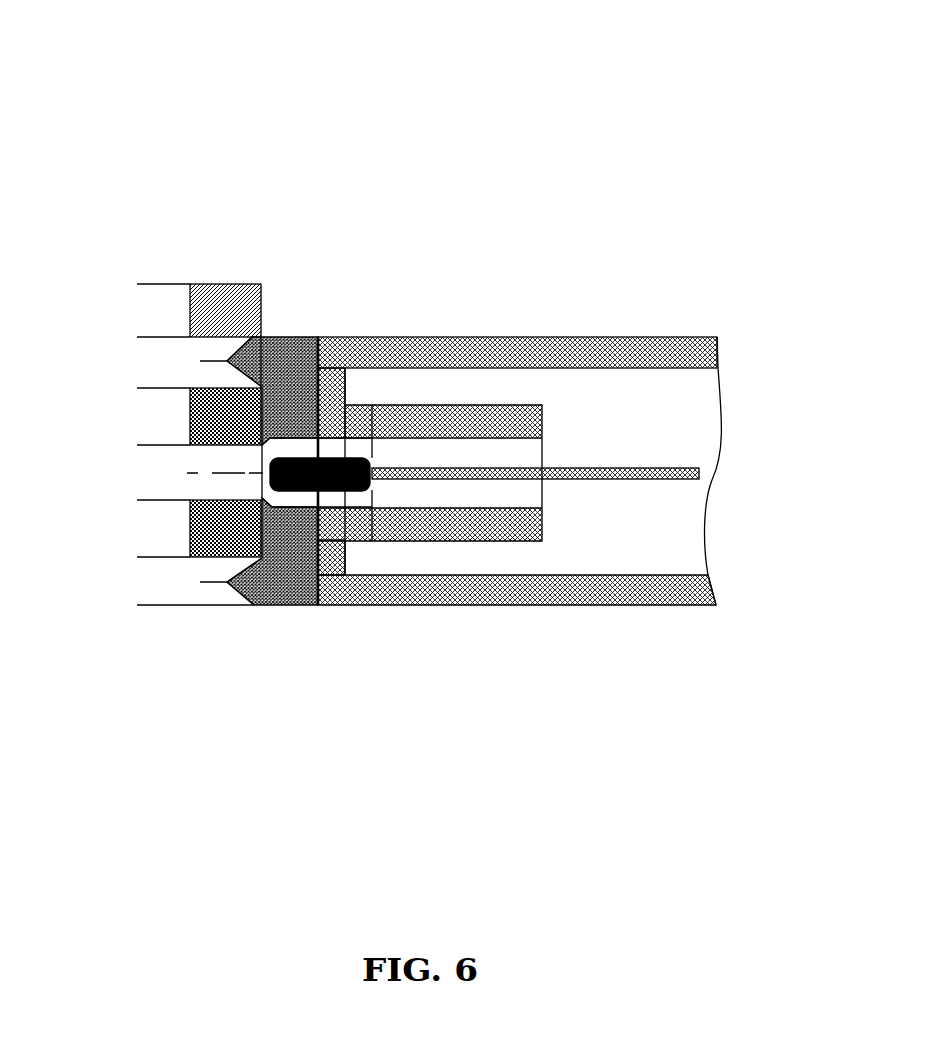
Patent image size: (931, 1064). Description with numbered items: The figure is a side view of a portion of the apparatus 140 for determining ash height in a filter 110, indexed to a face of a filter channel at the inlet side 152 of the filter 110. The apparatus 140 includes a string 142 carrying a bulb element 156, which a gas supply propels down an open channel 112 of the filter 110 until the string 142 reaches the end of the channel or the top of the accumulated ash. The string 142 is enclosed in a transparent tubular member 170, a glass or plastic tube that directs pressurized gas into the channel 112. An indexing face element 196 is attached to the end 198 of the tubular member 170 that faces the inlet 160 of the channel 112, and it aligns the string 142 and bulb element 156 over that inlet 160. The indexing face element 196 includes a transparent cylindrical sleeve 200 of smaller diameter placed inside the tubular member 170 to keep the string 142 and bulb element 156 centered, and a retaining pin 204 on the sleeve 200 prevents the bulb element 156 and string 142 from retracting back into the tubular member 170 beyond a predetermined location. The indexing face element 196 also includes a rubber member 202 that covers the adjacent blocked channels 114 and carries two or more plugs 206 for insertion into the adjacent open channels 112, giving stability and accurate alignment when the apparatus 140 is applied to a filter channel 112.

The apparatus 140 is at (742, 188).
The transparent tubular member 170 is at (598, 337).
The retaining pin 204 is at (372, 495).
The transparent cylindrical sleeve 200 is at (520, 523).
The rubber member 202 is at (307, 368).
The string 142 is at (633, 475).
The indexing face element 196 is at (298, 340).
The inlet 160 is at (262, 457).
The end 198 is at (321, 604).
The bulb element 156 is at (318, 478).
The blocked channels 114 is at (225, 310).
The filter 110 is at (222, 283).
The channel 112 is at (170, 362).
The plugs 206 is at (232, 353).
The inlet side 152 is at (272, 303).